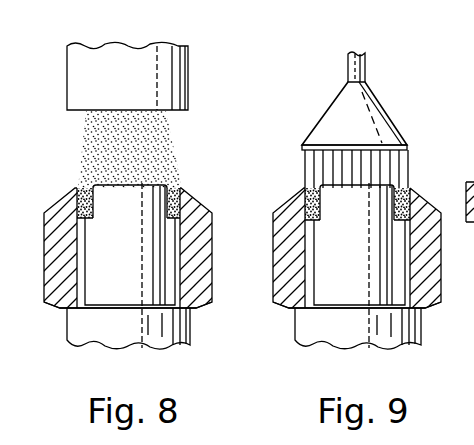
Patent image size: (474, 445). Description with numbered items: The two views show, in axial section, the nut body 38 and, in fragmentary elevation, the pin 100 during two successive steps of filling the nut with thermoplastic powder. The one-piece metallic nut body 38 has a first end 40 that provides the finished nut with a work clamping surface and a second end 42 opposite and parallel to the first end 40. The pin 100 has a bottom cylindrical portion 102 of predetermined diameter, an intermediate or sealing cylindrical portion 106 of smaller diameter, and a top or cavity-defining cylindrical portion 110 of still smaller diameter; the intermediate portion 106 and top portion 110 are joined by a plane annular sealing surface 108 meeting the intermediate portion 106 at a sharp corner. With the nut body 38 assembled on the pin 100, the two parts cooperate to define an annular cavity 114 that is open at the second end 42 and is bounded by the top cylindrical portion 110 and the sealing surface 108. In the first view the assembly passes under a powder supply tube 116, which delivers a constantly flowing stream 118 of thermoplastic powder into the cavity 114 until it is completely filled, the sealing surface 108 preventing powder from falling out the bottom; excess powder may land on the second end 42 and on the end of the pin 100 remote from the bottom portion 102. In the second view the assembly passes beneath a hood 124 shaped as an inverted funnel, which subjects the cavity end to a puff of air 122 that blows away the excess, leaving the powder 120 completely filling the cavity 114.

In FIG. 8, the nut body 38 is at (202, 282).
In FIG. 9, the nut body 38 is at (429, 278).
In FIG. 8, the first end 40 is at (63, 308).
In FIG. 9, the first end 40 is at (292, 310).
In FIG. 8, the second end 42 is at (77, 187).
In FIG. 9, the second end 42 is at (411, 189).
In FIG. 8, the pin 100 is at (167, 351).
In FIG. 9, the pin 100 is at (397, 351).
In FIG. 8, the bottom cylindrical portion 102 is at (107, 333).
In FIG. 9, the bottom cylindrical portion 102 is at (335, 340).
In FIG. 8, the intermediate cylindrical portion 106 is at (107, 260).
In FIG. 9, the intermediate cylindrical portion 106 is at (331, 250).
In FIG. 8, the sealing surface 108 is at (118, 217).
In FIG. 9, the sealing surface 108 is at (352, 217).
In FIG. 8, the top cylindrical portion 110 is at (135, 195).
In FIG. 9, the top cylindrical portion 110 is at (332, 195).
In FIG. 8, the annular cavity 114 is at (177, 189).
In FIG. 8, the powder supply tube 116 is at (82, 72).
In FIG. 8, the stream of powder 118 is at (100, 128).
In FIG. 9, the powder filling cavity 120 is at (306, 193).
In FIG. 9, the puff of air 122 is at (397, 167).
In FIG. 9, the hood 124 is at (341, 123).